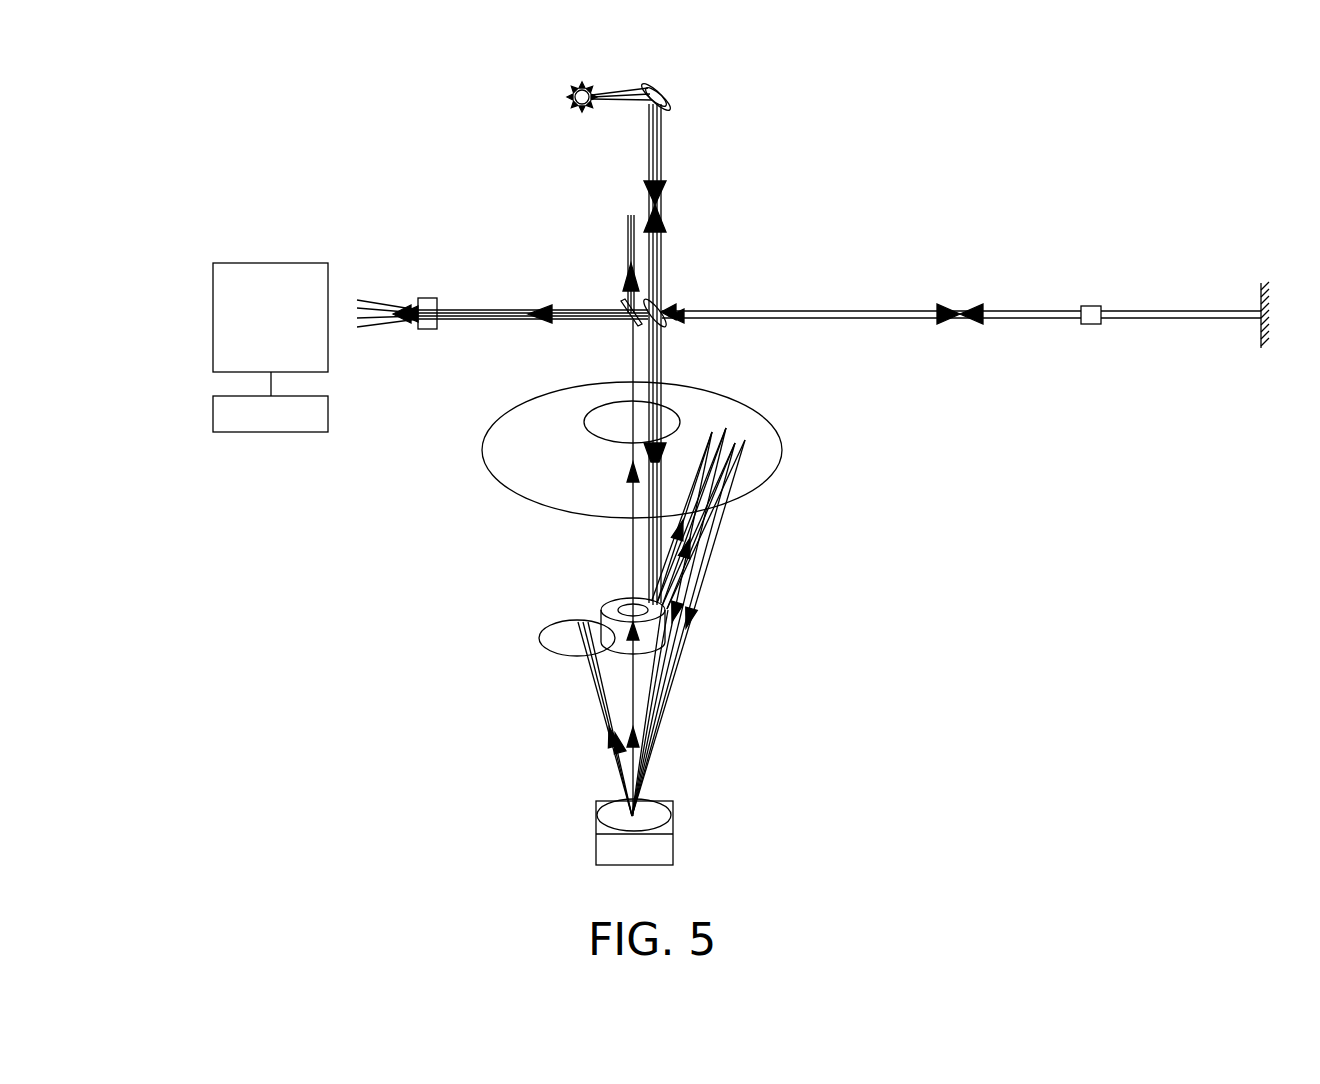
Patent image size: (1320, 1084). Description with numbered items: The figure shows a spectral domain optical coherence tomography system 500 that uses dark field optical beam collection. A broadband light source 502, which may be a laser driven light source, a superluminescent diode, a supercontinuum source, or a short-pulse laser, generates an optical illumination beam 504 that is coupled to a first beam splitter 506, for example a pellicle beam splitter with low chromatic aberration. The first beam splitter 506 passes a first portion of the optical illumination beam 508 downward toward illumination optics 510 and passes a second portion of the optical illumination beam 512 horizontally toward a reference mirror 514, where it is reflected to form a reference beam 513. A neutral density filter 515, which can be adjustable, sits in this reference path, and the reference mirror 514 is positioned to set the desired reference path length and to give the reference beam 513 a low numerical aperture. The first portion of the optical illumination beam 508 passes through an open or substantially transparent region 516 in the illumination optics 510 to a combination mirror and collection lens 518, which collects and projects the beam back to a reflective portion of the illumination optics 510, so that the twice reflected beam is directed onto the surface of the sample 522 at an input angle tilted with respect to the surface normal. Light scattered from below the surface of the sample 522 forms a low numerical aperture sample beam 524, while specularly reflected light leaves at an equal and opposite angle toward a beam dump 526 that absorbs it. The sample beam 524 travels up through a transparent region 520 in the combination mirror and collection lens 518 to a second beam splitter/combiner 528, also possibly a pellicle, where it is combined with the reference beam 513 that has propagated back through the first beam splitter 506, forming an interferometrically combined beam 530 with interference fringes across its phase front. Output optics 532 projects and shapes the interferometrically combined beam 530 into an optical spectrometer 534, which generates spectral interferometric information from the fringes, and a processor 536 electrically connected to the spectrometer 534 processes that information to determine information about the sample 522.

The spectral domain optical coherence tomography system 500 is at (926, 98).
The broadband light source 502 is at (572, 90).
The optical illumination beam 504 is at (662, 150).
The first beam splitter 506 is at (666, 306).
The first portion of the optical illumination beam 508 is at (662, 355).
The illumination optics 510 is at (782, 450).
The second portion of the optical illumination beam 512 is at (818, 309).
The reference beam 513 is at (1180, 309).
The reference mirror 514 is at (1258, 330).
The neutral density filter 515 is at (1090, 305).
The substantially transparent region 516 is at (605, 414).
The combination mirror and collection lens 518 is at (662, 630).
The transparent region 520 is at (627, 608).
The sample 522 is at (662, 812).
The sample beam 524 is at (636, 710).
The beam dump 526 is at (577, 640).
The second beam splitter/combiner 528 is at (622, 305).
The interferometrically combined beam 530 is at (482, 309).
The output optics 532 is at (426, 298).
The optical spectrometer 534 is at (213, 318).
The processor 536 is at (274, 432).